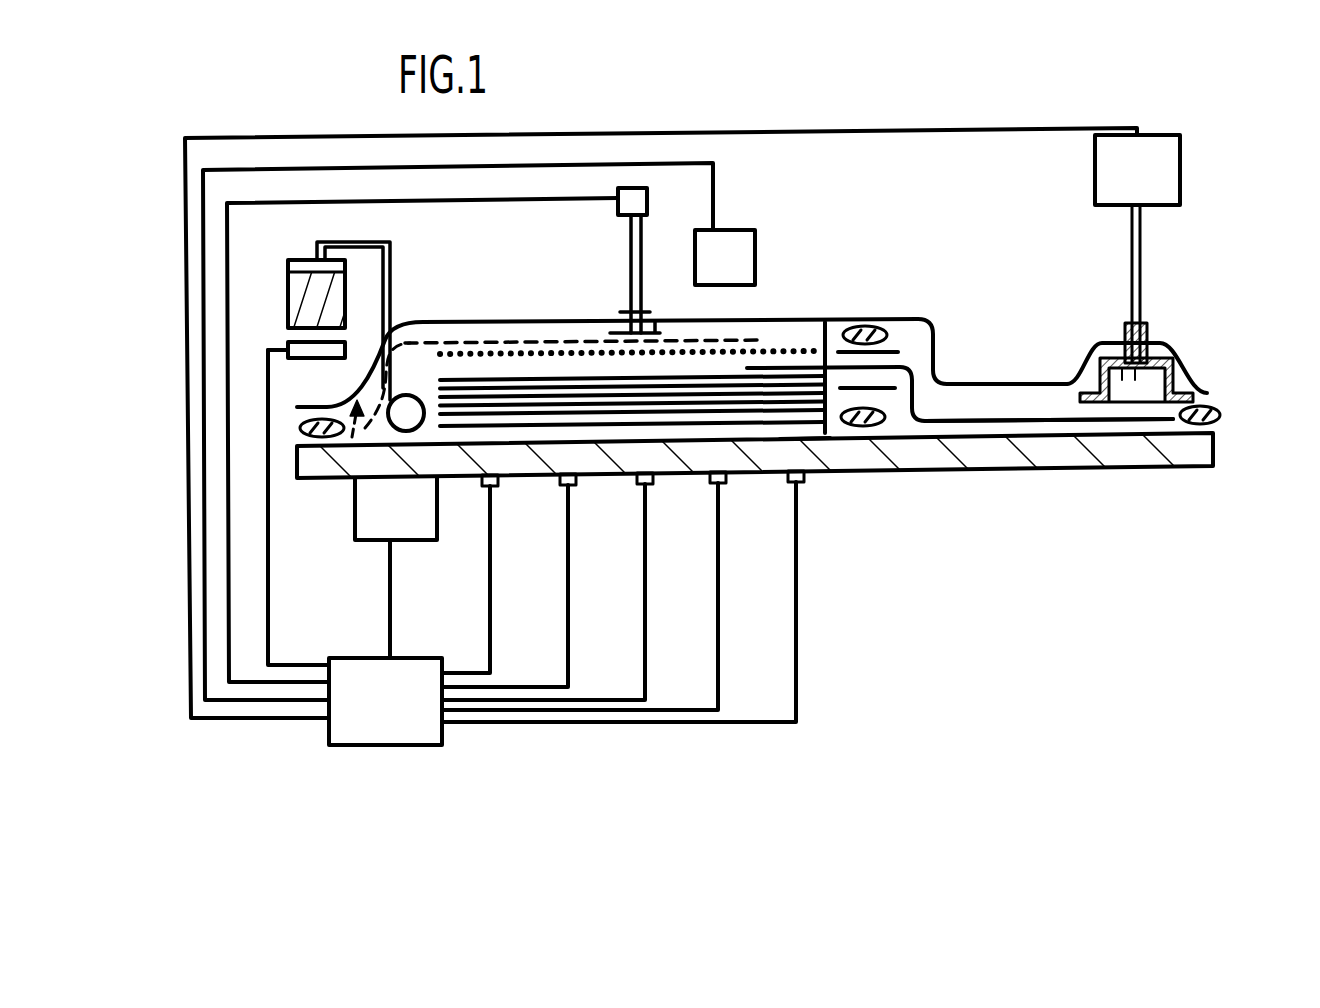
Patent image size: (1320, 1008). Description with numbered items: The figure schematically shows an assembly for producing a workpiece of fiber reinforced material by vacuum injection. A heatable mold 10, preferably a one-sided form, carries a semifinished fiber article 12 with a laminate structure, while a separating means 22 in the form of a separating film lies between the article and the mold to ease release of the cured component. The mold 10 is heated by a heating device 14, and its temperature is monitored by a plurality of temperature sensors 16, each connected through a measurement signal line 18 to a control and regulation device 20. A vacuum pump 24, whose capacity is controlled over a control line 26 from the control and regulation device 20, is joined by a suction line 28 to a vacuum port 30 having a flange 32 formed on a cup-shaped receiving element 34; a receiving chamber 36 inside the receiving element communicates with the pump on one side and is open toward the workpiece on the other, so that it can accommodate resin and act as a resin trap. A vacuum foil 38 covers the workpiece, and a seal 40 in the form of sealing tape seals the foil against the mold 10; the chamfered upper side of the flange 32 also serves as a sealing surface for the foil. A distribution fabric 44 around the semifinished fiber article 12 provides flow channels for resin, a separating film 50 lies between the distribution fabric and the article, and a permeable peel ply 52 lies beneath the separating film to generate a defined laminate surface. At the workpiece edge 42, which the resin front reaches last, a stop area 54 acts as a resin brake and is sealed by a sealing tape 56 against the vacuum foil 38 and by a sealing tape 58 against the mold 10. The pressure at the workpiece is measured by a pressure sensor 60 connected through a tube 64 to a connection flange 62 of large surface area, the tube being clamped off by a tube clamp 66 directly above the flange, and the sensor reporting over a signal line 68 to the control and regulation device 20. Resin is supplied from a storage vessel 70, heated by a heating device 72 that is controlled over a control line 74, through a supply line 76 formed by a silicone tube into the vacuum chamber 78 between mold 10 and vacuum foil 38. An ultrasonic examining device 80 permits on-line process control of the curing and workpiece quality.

The heatable mold 10 is at (1015, 458).
The semifinished fiber article 12 is at (800, 440).
The heating device 14 is at (423, 530).
The temperature sensors 16 is at (495, 490).
The measurement signal line 18 is at (490, 550).
The control and regulation device 20 is at (410, 738).
The separating means 22 is at (793, 427).
The vacuum pump 24 is at (1167, 145).
The control line 26 is at (708, 132).
The suction line 28 is at (1141, 300).
The vacuum port 30 is at (1202, 373).
The flange 32 is at (1195, 402).
The receiving element 34 is at (1097, 367).
The receiving chamber 36 is at (1110, 367).
The vacuum foil 38 is at (870, 321).
The seal 40 is at (307, 423).
The edge 42 is at (823, 321).
The distribution fabric 44 is at (495, 340).
The separating film 50 is at (763, 350).
The peel ply 52 is at (1058, 423).
The stop area 54 is at (893, 394).
The sealing tape 56 is at (887, 332).
The sealing tape 58 is at (873, 425).
The pressure sensor 60 is at (645, 200).
The connection flange 62 is at (655, 319).
The tube 64 is at (628, 273).
The tube clamp 66 is at (627, 313).
The signal line 68 is at (590, 198).
The storage vessel 70 is at (300, 312).
The heating device 72 is at (303, 358).
The control line 74 is at (270, 585).
The supply line 76 is at (373, 238).
The vacuum chamber 78 is at (352, 440).
The ultrasonic examining device 80 is at (740, 238).